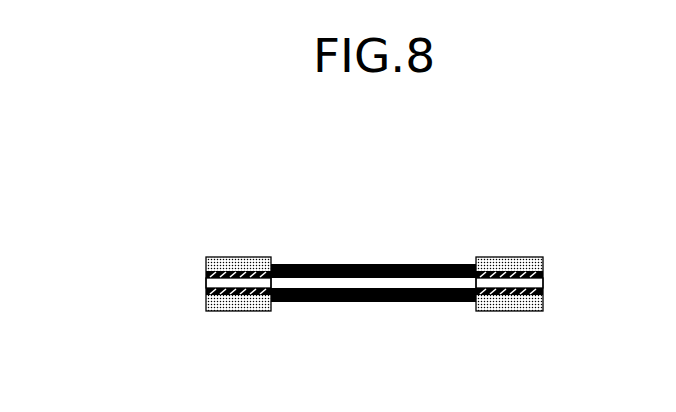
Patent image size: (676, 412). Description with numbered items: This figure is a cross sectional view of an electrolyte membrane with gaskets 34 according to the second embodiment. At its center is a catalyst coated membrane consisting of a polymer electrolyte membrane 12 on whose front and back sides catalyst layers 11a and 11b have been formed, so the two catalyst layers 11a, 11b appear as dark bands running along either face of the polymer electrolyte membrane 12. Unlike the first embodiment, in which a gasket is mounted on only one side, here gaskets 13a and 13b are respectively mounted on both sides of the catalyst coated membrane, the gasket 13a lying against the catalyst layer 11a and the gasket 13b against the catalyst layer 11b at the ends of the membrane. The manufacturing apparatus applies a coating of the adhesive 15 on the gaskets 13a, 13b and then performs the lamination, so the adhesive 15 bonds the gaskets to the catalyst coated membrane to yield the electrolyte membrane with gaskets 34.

The electrolyte membrane with gaskets 34 is at (357, 197).
The catalyst layer 11a is at (382, 264).
The catalyst layer 11b is at (370, 302).
The polymer electrolyte membrane 12 is at (206, 283).
The gasket 13a is at (206, 266).
The gasket 13b is at (206, 308).
The adhesive 15 is at (543, 278).